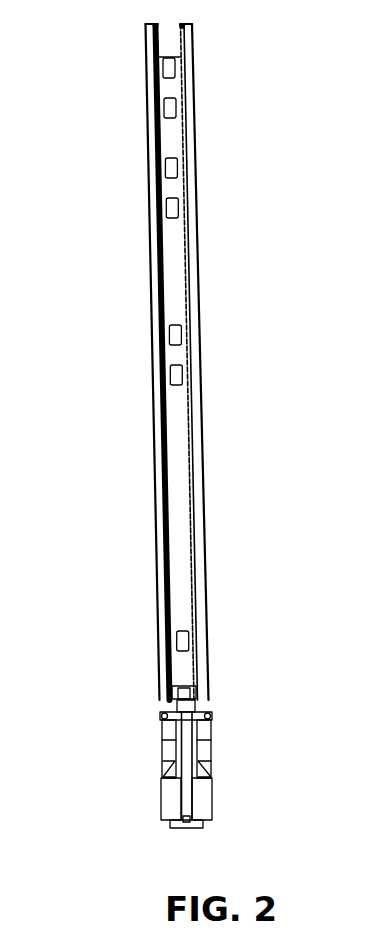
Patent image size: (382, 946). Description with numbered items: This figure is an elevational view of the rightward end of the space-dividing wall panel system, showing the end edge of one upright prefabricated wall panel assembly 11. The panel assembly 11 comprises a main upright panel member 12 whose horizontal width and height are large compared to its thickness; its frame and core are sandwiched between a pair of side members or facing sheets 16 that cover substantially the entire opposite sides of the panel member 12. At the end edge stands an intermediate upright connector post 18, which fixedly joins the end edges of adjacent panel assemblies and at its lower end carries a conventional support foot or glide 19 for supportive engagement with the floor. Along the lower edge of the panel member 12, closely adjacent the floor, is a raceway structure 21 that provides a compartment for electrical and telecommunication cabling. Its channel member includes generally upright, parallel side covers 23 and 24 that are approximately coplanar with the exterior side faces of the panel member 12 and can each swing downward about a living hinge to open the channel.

The wall panel assembly 11 is at (120, 288).
The main upright panel member 12 is at (208, 357).
The side members or sheets 16 is at (157, 477).
The connector post 18 is at (172, 262).
The support foot or glide 19 is at (182, 790).
The raceway structure 21 is at (143, 751).
The side wall or cover 23 is at (163, 797).
The side wall or cover 24 is at (217, 795).